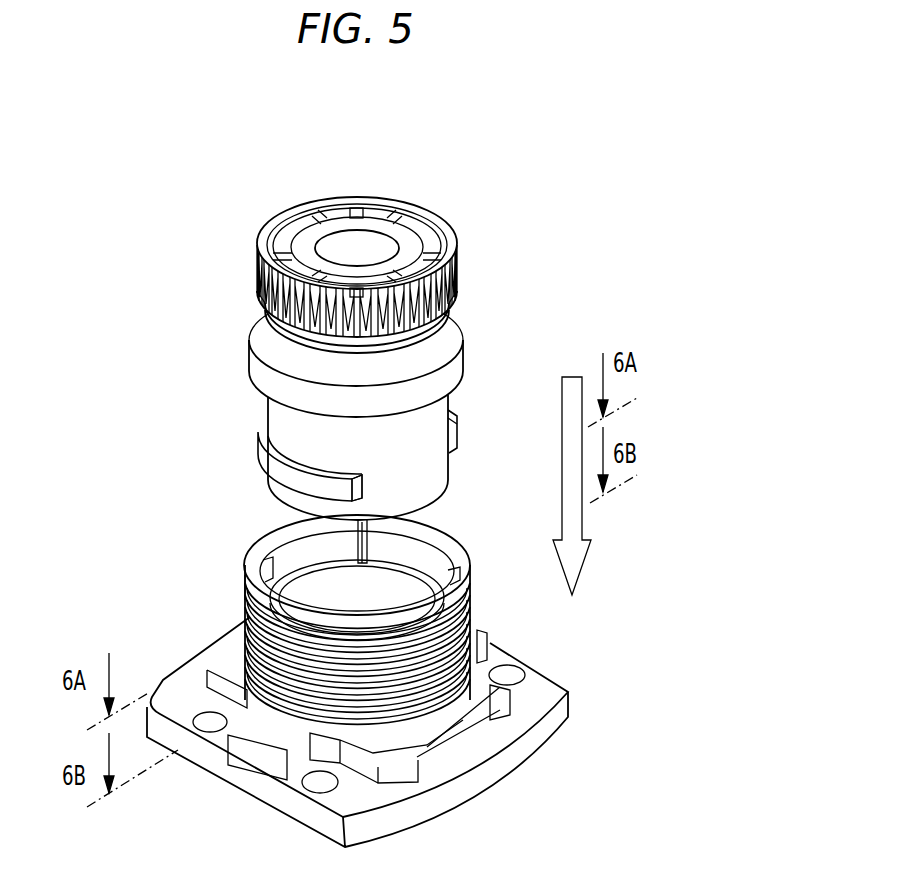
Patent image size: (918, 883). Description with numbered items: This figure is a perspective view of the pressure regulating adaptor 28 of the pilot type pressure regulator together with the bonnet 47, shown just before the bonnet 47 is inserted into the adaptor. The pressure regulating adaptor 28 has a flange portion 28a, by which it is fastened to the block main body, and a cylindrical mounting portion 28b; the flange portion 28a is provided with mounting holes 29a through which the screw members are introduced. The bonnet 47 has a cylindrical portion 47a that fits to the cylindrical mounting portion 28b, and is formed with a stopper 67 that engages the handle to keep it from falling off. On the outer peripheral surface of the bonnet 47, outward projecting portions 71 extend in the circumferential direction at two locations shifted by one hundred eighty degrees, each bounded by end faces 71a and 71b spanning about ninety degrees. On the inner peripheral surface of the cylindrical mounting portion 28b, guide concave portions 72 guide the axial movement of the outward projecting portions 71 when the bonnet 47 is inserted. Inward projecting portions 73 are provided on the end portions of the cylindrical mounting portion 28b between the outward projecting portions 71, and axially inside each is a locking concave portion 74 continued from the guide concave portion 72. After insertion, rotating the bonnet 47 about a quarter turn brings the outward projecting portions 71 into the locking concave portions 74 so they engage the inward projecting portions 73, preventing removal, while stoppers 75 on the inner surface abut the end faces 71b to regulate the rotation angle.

The bonnet 47 is at (387, 337).
The cylindrical portion 47a is at (280, 422).
The stopper 67 is at (453, 335).
The outward projecting portions 71 is at (268, 462).
The end face 71a is at (365, 490).
The end face 71b is at (450, 452).
The stoppers 75 is at (367, 533).
The pressure regulating adaptor 28 is at (376, 681).
The flange portion 28a is at (537, 678).
The cylindrical mounting portion 28b is at (242, 588).
The mounting holes 29a is at (300, 782).
The guide concave portions 72 is at (325, 619).
The inward projecting portions 73 is at (270, 537).
The locking concave portion 74 is at (270, 567).